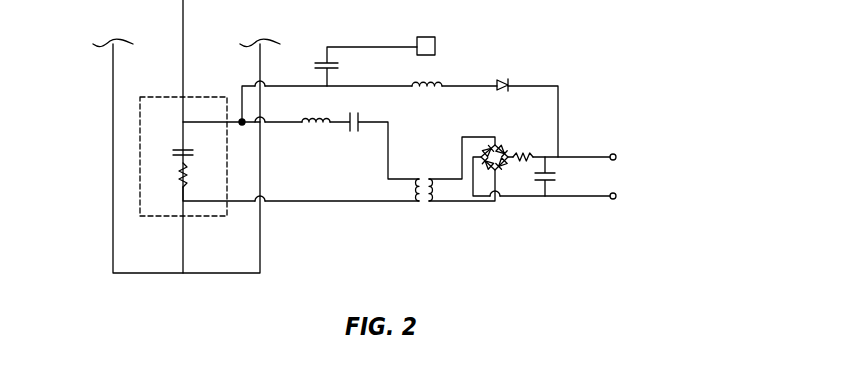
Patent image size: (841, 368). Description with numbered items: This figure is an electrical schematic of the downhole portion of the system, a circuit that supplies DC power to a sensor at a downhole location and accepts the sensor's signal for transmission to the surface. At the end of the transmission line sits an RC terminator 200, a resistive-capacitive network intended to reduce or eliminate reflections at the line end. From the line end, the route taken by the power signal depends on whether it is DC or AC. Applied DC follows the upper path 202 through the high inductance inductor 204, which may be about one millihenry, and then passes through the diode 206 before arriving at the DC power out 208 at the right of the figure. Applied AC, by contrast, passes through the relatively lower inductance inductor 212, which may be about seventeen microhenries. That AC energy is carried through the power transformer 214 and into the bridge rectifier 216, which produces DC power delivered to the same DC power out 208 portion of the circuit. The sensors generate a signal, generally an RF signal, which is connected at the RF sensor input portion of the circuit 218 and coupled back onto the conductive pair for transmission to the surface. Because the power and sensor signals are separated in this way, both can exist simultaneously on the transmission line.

The RC terminator 200 is at (133, 230).
The upper path 202 is at (556, 79).
The high inductance inductor 204 is at (427, 90).
The diode 206 is at (500, 78).
The DC power out 208 is at (613, 175).
The lower inductance inductor 212 is at (316, 127).
The power transformer 214 is at (423, 205).
The bridge rectifier 216 is at (500, 167).
The RF sensor input portion 218 is at (428, 36).